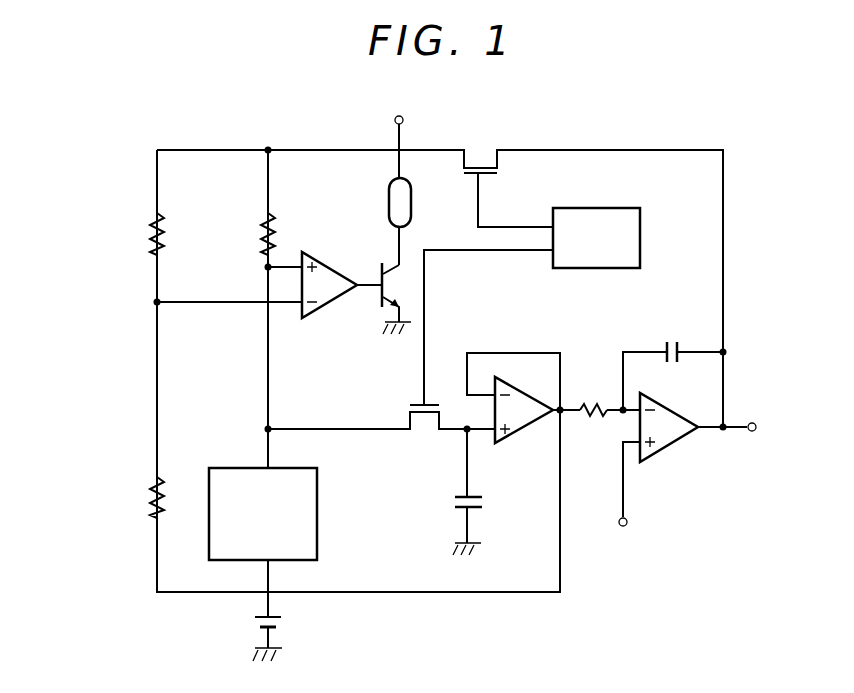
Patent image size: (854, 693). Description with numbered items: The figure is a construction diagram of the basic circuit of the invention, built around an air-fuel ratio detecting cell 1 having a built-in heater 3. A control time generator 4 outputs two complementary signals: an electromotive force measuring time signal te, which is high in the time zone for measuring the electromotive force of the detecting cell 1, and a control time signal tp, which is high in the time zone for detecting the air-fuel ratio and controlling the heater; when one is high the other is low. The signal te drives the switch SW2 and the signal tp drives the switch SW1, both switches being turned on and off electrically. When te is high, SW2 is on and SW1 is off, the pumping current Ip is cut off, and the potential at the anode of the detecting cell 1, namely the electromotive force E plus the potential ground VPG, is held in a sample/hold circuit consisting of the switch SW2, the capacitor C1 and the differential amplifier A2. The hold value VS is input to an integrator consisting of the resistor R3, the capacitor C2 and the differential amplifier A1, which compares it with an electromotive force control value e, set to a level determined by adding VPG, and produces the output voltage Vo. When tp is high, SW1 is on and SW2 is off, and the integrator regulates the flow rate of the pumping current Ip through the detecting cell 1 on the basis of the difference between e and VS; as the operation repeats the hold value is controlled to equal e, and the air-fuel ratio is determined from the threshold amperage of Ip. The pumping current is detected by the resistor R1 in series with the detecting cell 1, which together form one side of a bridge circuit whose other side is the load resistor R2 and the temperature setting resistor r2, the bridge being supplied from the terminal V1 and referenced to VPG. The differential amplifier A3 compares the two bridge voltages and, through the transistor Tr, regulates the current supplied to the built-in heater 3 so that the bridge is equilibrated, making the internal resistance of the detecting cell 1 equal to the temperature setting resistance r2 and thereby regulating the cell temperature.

The air-fuel ratio detecting cell 1 is at (218, 468).
The heater 3 is at (395, 197).
The control time generator 4 is at (641, 222).
The pumping current detecting resistor R1 is at (264, 238).
The load resistor R2 is at (152, 232).
The temperature setting resistor r2 is at (152, 490).
The resistor R3 is at (588, 405).
The capacitor C1 is at (455, 502).
The capacitor C2 is at (673, 341).
The differential amplifier A1 is at (682, 445).
The differential amplifier A2 is at (526, 438).
The differential amplifier A3 is at (331, 275).
The switch SW1 is at (478, 168).
The switch SW2 is at (422, 433).
The transistor Tr is at (390, 306).
The supply voltage terminal V1 is at (397, 108).
The potential ground VPG is at (286, 638).
The hold value VS is at (564, 414).
The output voltage Vo is at (765, 430).
The electromotive force control value e is at (622, 535).
The pumping current Ip is at (291, 240).
The control time signal tp is at (529, 214).
The electromotive force measuring time signal te is at (531, 264).